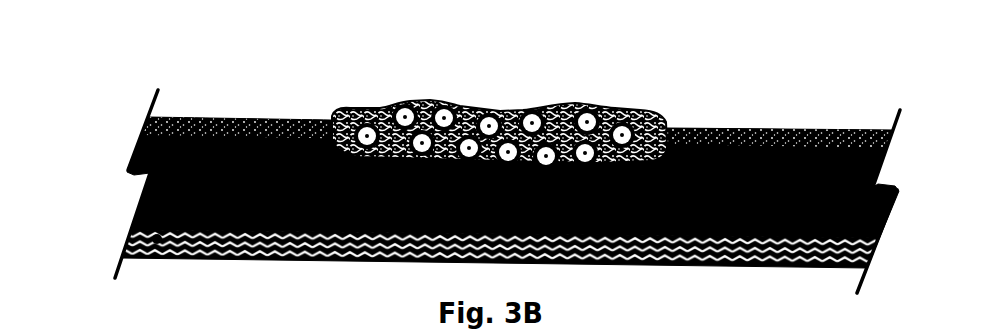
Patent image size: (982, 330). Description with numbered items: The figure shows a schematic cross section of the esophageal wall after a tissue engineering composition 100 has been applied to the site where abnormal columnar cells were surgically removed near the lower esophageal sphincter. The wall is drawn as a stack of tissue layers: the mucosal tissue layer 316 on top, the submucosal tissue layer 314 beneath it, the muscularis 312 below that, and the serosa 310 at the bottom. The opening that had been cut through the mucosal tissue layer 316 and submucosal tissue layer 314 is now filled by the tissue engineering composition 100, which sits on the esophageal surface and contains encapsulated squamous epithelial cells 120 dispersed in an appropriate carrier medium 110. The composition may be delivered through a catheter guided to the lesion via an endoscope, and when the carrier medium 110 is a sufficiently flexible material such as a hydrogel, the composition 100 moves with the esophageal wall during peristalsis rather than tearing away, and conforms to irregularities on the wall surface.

The tissue engineering composition 100 is at (520, 95).
The carrier medium 110 is at (487, 95).
The encapsulated squamous epithelial cells 120 is at (406, 106).
The serosa 310 is at (128, 240).
The muscularis 312 is at (145, 193).
The submucosal tissue layer 314 is at (136, 151).
The mucosal tissue layer 316 is at (146, 125).